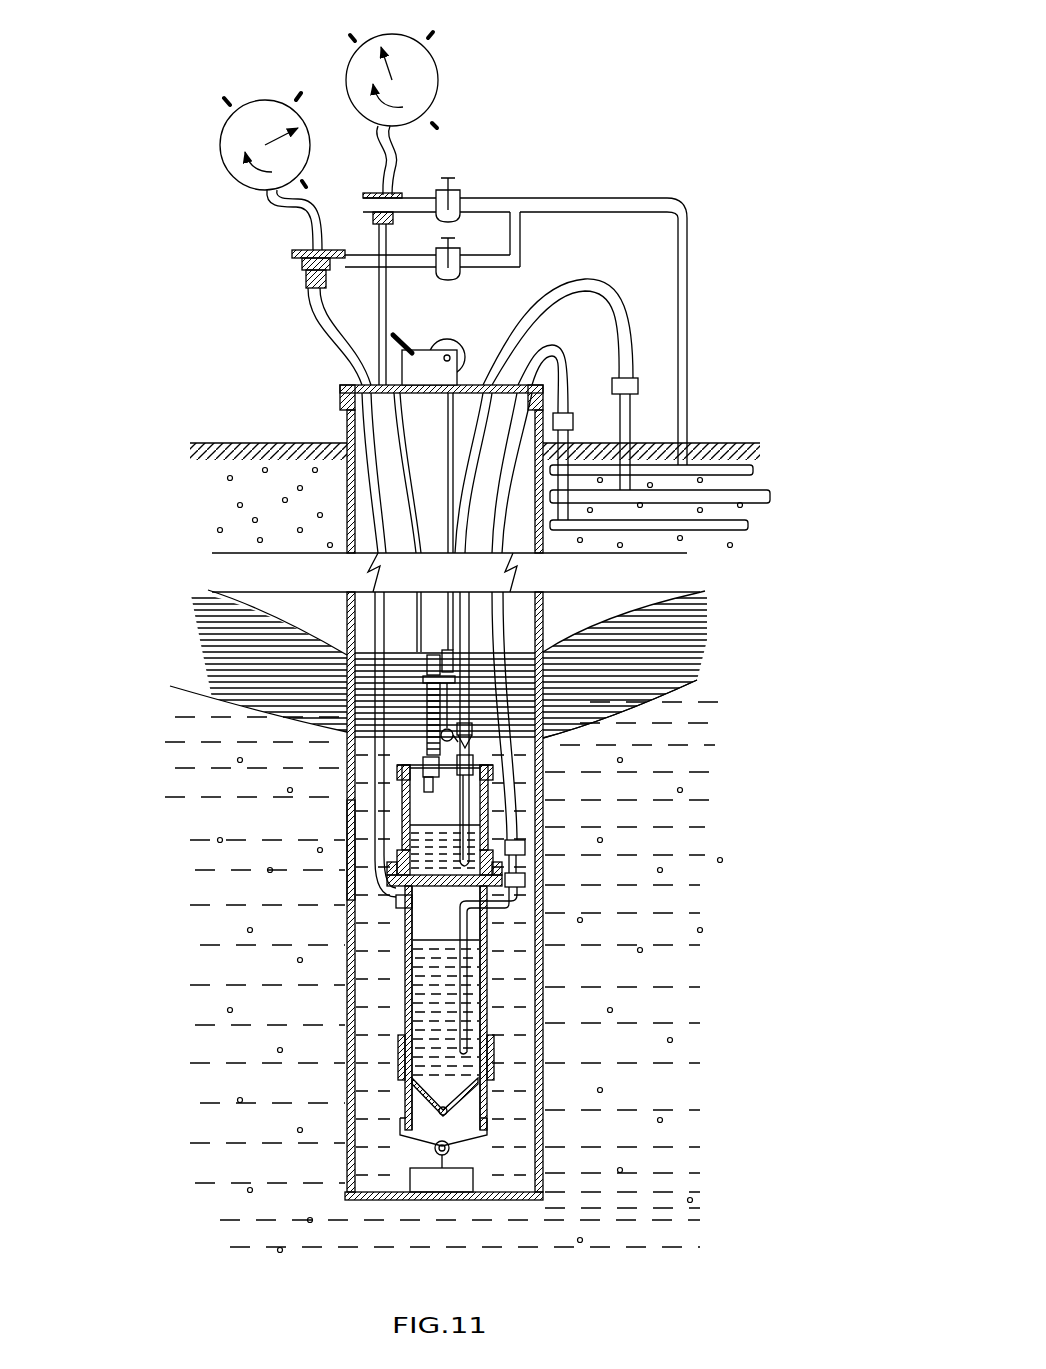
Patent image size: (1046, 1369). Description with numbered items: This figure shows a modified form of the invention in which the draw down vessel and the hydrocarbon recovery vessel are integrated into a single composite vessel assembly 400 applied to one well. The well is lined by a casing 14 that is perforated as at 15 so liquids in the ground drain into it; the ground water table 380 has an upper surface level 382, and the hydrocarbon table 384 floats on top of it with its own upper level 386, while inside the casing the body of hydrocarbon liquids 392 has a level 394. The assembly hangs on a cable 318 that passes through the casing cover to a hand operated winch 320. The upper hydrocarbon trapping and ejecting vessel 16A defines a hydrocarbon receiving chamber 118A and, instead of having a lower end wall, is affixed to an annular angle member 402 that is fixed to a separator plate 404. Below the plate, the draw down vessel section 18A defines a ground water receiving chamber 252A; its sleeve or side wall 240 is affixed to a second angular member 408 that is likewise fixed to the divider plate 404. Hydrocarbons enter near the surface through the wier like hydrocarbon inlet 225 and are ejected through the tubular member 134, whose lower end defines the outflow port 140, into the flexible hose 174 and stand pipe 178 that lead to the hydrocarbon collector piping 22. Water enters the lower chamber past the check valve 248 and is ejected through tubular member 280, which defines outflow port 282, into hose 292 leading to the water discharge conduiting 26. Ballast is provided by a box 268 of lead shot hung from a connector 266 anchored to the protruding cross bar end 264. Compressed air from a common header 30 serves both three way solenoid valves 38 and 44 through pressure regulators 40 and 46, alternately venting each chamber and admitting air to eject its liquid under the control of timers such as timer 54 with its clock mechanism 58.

The timer 54 is at (268, 97).
The clock mechanism 58 is at (442, 68).
The three way solenoid operated control valve 38 is at (402, 185).
The pressure regulator 40 is at (482, 180).
The three way solenoid operated valve 44 is at (272, 289).
The pressure regulator 46 is at (445, 283).
The winch 320 is at (466, 340).
The flexible piping or hosing 292 is at (547, 346).
The flexible hose or piping 174 is at (604, 292).
The stand pipe 178 is at (687, 325).
The cable 318 is at (447, 455).
The compressed air supply line or header 30 is at (752, 468).
The hydrocarbon collector conduit or piping 22 is at (772, 497).
The water discharge conduiting 26 is at (750, 528).
The body of hydrocarbon liquids 392 is at (375, 585).
The hydrocarbon inlet 225 is at (448, 596).
The level of the body of hydrocarbon liquids 394 is at (515, 594).
The upper level of the hydrocarbons 386 is at (600, 628).
The hydrocarbon table 384 is at (680, 628).
The upper surface level of ground water table 382 is at (660, 690).
The ground water table 380 is at (730, 820).
The hydrocarbon receiving chamber 118A is at (400, 790).
The hydrocarbon trapping and ejecting vessel 16A is at (400, 815).
The composite vessel assembly 400 is at (345, 855).
The annular angle member 402 is at (398, 870).
The separator plate 404 is at (412, 928).
The ground water receiving chamber 252A is at (435, 968).
The draw down vessel section 18A is at (368, 1012).
The check valve 248 is at (420, 1112).
The perforations 15 is at (543, 820).
The casing 14 is at (350, 1162).
The box 268 is at (432, 1185).
The connector 266 is at (470, 1145).
The end of cross bar 264 is at (490, 1122).
The vessel outflow port 282 is at (494, 1068).
The tubular member 280 is at (468, 1022).
The sleeve or side wall 240 is at (488, 995).
The second angular member 408 is at (545, 905).
The tubular member 134 is at (470, 810).
The vessel chamber liquid outflow port 140 is at (452, 862).